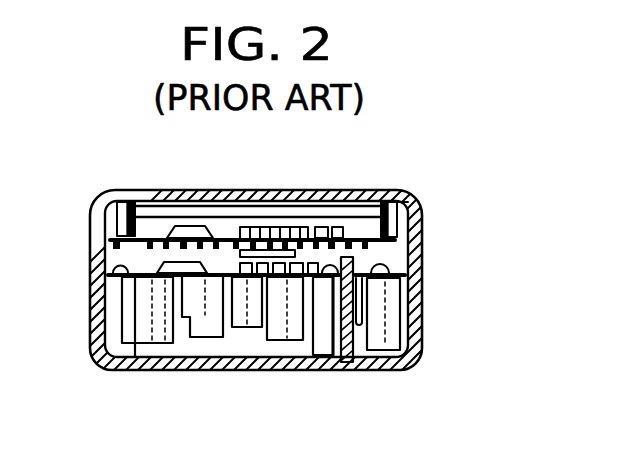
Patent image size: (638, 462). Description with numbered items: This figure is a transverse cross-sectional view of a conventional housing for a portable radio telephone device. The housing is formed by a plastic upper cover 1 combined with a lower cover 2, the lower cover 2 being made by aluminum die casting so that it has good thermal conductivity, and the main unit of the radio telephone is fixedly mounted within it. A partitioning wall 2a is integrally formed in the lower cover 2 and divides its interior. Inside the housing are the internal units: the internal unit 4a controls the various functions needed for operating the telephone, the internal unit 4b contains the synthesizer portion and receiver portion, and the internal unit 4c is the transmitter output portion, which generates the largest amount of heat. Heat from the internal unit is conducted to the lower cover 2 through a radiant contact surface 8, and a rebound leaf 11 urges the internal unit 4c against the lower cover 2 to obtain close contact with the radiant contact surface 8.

The upper cover 1 is at (170, 190).
The lower cover 2 is at (173, 370).
The partitioning wall 2a is at (338, 322).
The internal unit 4a is at (272, 205).
The internal unit 4b is at (255, 327).
The internal unit 4c is at (421, 325).
The radiant contact surface 8 is at (421, 292).
The rebound leaf 11 is at (360, 330).